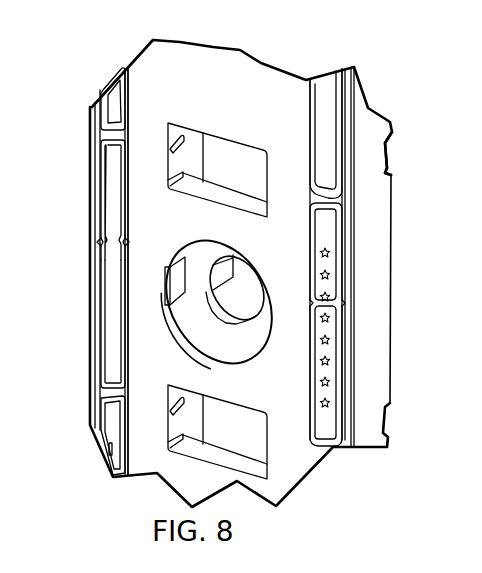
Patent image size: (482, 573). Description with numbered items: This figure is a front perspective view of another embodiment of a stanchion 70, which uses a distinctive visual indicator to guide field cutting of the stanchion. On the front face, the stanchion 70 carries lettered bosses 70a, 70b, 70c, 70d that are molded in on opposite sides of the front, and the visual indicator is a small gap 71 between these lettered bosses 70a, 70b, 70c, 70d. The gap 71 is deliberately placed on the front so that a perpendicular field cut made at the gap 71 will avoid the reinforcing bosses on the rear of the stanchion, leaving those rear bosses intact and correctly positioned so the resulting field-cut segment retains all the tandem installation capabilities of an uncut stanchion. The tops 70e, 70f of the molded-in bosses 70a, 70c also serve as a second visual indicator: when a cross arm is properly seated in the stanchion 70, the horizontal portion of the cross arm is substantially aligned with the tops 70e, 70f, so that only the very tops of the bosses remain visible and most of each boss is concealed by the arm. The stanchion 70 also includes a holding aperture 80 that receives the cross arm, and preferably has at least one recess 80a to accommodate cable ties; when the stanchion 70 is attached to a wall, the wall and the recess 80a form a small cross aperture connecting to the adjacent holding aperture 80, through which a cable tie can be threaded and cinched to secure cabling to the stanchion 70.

The stanchion 70 is at (389, 326).
The lettered boss 70a is at (97, 200).
The lettered boss 70b is at (97, 312).
The lettered boss 70c is at (341, 268).
The lettered boss 70d is at (341, 346).
The top of molded-in boss 70e is at (97, 128).
The top of molded-in boss 70f is at (340, 200).
The gap 71 is at (97, 236).
The holding aperture 80 is at (219, 135).
The recess 80a is at (388, 158).